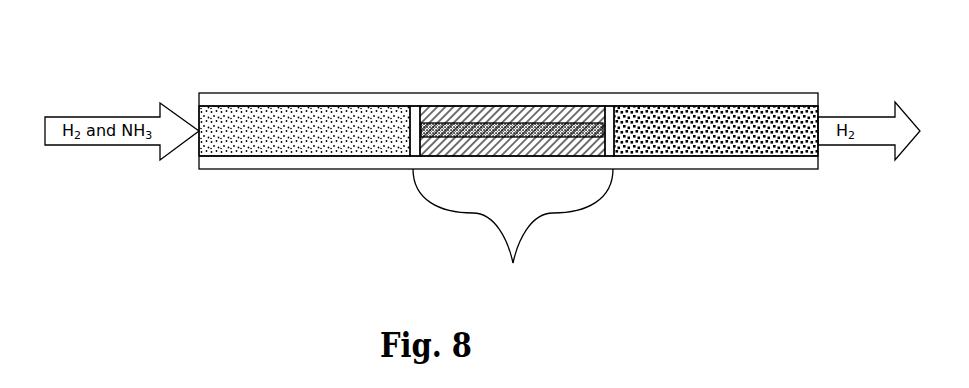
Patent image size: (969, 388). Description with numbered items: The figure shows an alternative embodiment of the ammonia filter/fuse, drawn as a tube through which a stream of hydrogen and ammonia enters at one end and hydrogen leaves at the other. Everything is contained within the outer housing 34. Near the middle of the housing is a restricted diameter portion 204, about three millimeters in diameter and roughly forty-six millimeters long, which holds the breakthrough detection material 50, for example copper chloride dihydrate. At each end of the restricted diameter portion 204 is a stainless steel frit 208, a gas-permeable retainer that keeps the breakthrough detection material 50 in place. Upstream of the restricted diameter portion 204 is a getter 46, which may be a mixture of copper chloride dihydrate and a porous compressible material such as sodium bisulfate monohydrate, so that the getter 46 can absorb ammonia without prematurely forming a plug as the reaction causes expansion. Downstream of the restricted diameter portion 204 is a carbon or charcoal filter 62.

The outer housing 34 is at (279, 88).
The getter 46 is at (315, 145).
The breakthrough detection material 50 is at (466, 120).
The carbon or charcoal filter 62 is at (723, 143).
The restricted diameter portion 204 is at (513, 276).
The stainless steel frit 208 is at (420, 102).